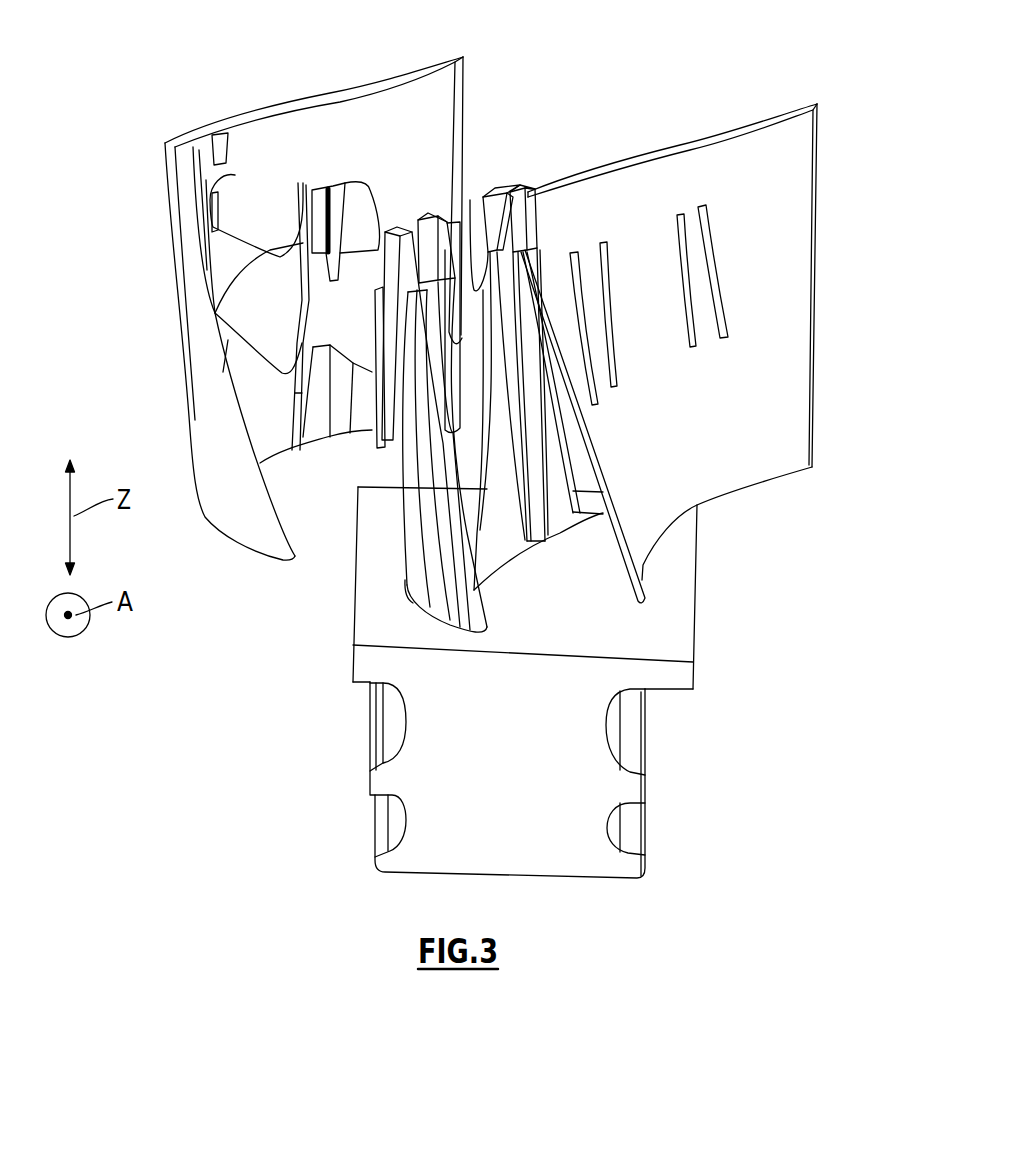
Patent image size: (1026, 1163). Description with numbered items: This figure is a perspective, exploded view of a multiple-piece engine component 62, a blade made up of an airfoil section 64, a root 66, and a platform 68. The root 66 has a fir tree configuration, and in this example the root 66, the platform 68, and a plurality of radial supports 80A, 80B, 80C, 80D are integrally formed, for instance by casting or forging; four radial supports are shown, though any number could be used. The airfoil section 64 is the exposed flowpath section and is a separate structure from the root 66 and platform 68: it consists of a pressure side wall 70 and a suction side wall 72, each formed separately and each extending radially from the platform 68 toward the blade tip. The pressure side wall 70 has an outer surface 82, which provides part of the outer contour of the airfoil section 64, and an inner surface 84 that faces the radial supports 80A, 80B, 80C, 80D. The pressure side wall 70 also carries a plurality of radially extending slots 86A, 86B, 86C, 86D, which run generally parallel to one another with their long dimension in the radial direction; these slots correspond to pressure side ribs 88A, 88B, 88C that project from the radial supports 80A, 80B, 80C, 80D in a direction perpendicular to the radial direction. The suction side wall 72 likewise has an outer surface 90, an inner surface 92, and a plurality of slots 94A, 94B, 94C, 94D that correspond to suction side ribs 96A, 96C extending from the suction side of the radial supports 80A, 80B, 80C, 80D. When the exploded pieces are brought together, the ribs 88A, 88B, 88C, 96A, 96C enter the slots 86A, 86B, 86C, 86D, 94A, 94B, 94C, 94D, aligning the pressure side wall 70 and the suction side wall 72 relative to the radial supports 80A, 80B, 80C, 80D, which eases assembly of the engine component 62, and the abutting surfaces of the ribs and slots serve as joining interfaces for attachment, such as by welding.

The engine component 62 is at (258, 596).
The airfoil section 64 is at (135, 262).
The root 66 is at (657, 765).
The platform 68 is at (680, 627).
The pressure side wall 70 is at (818, 305).
The suction side wall 72 is at (180, 335).
The radial support 80A is at (398, 217).
The radial support 80B is at (437, 217).
The radial support 80C is at (487, 193).
The radial support 80D is at (513, 192).
The outer surface 82 is at (770, 405).
The inner surface 84 is at (692, 143).
The radially extending slot 86A is at (600, 390).
The radially extending slot 86B is at (610, 358).
The radially extending slot 86C is at (687, 277).
The radially extending slot 86D is at (717, 257).
The pressure side rib 88A is at (535, 210).
The pressure side rib 88B is at (535, 210).
The pressure side rib 88C is at (536, 310).
The outer surface 90 is at (318, 88).
The inner surface 92 is at (398, 102).
The slot 94A is at (192, 212).
The slot 94B is at (215, 193).
The slot 94C is at (302, 187).
The slot 94D is at (332, 157).
The suction side rib 96A is at (380, 315).
The suction side rib 96C is at (463, 293).